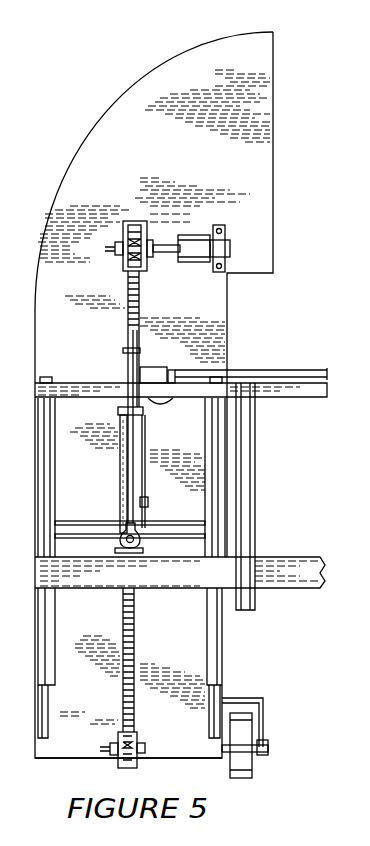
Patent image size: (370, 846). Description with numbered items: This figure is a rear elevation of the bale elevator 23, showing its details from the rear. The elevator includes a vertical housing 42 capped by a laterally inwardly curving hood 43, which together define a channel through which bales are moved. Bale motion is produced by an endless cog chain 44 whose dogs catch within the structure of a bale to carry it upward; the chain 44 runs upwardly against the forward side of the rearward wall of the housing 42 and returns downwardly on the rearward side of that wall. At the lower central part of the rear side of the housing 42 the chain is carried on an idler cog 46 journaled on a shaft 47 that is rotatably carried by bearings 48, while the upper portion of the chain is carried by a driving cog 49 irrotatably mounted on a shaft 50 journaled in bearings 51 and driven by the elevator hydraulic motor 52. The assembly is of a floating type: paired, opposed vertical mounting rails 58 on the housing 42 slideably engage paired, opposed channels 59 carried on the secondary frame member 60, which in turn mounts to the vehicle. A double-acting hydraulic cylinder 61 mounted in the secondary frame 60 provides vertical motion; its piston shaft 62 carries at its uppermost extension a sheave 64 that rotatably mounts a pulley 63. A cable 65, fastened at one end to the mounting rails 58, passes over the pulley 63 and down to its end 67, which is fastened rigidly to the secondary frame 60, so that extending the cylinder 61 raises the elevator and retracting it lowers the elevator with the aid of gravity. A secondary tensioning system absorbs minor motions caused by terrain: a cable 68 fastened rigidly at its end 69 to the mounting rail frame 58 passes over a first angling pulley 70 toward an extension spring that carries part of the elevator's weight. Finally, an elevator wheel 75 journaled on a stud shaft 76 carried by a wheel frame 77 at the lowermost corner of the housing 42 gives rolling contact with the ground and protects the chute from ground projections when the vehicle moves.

The bale elevator 23 is at (89, 184).
The vertical housing 42 is at (88, 614).
The laterally inwardly curving hood 43 is at (213, 82).
The endless cog chain 44 is at (128, 284).
The idler cog 46 is at (131, 766).
The shaft 47 is at (138, 746).
The bearings 48 is at (115, 743).
The driving cog 49 is at (135, 221).
The shaft 50 is at (166, 253).
The bearings 51 is at (118, 246).
The elevator hydraulic motor 52 is at (209, 232).
The vertical mounting rails 58 is at (41, 712).
The channels 59 is at (213, 630).
The secondary frame member 60 is at (44, 462).
The double-acting hydraulic cylinder 61 is at (125, 505).
The piston shaft 62 is at (119, 409).
The pulley 63 is at (126, 331).
The sheave 64 is at (139, 340).
The cable 65 is at (130, 469).
The end 67 is at (121, 549).
The cable 68 is at (308, 364).
The end 69 is at (148, 500).
The first angling pulley 70 is at (163, 404).
The elevator wheel 75 is at (245, 752).
The stud shaft 76 is at (262, 746).
The wheel frame 77 is at (258, 698).